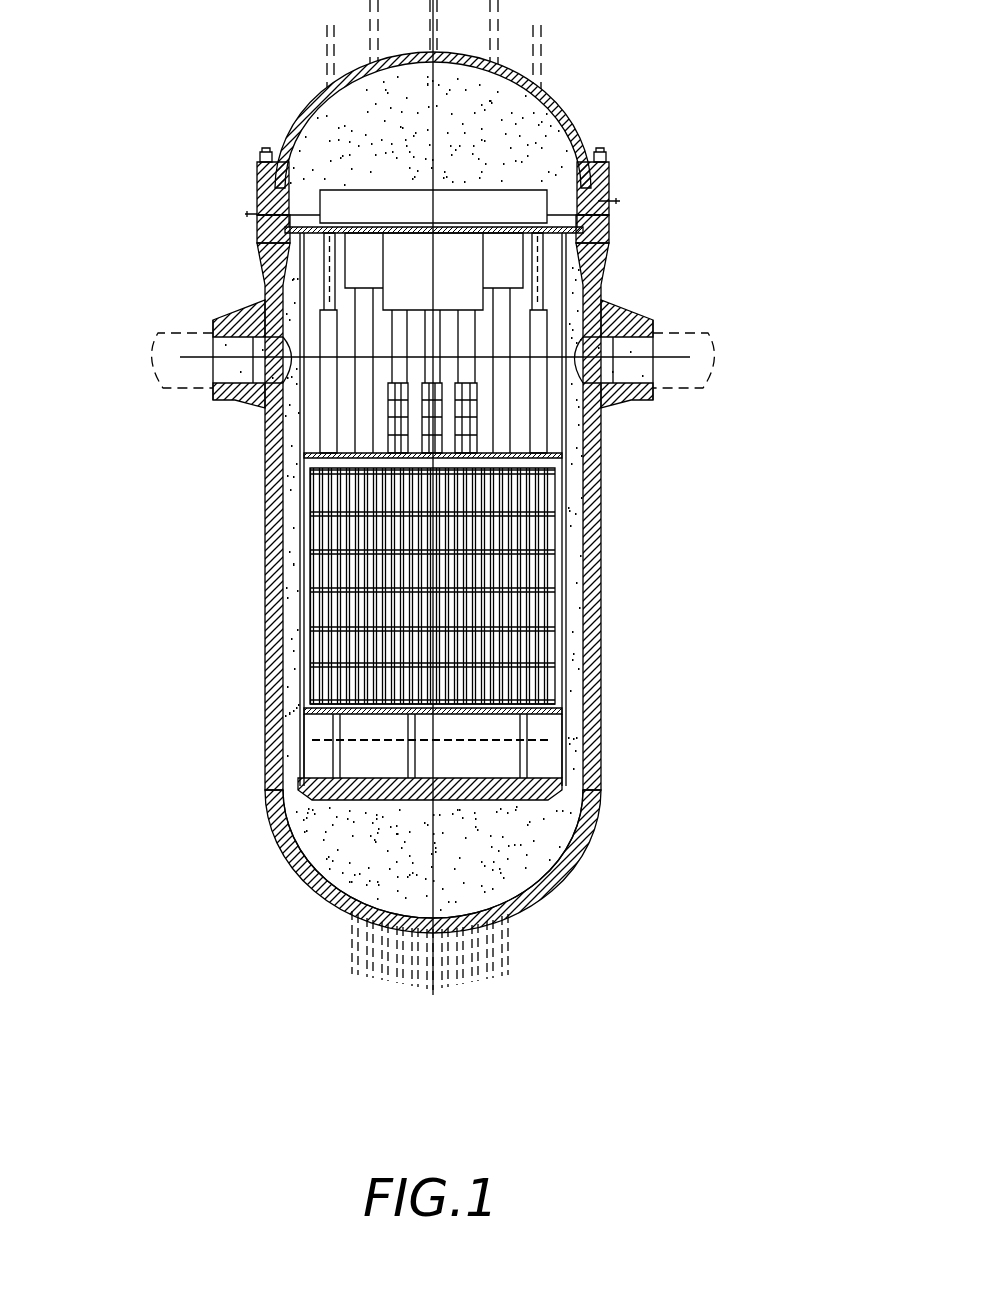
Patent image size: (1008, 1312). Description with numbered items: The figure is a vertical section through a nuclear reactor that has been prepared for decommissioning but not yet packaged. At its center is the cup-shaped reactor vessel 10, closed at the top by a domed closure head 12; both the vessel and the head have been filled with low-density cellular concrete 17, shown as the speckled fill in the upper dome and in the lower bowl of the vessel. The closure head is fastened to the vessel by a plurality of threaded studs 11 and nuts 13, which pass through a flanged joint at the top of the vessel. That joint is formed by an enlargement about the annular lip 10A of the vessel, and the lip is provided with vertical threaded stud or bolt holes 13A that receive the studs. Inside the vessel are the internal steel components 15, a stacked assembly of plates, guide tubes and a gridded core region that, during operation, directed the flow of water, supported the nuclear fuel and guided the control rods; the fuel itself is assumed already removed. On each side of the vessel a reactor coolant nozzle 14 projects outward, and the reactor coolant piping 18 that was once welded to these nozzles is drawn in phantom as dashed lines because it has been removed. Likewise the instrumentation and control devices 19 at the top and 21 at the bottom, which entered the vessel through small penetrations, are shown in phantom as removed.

The reactor vessel 10 is at (610, 706).
The annular lip 10A is at (633, 219).
The threaded studs 11 is at (268, 143).
The closure head 12 is at (629, 164).
The nuts 13 is at (243, 158).
The threaded bolt holes 13A is at (615, 253).
The reactor coolant nozzles 14 is at (236, 308).
The internal steel components 15 is at (546, 560).
The low-density cellular concrete 17 is at (345, 843).
The reactor coolant piping 18 is at (154, 398).
The instrumentation and control devices 19 is at (562, 38).
The instrumentation and control devices 21 is at (527, 950).